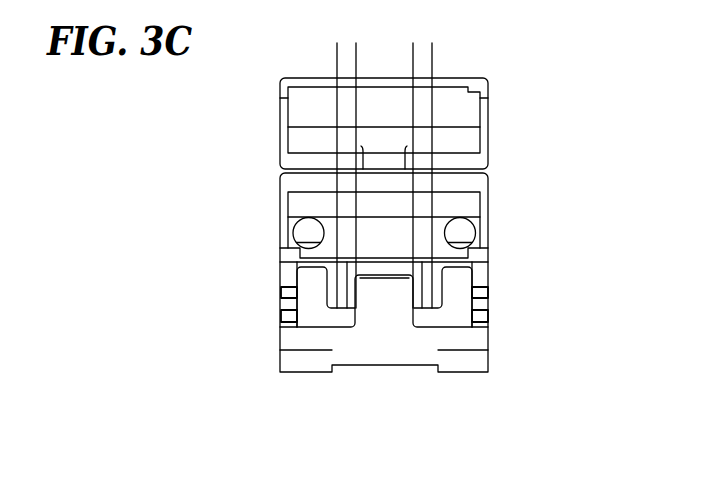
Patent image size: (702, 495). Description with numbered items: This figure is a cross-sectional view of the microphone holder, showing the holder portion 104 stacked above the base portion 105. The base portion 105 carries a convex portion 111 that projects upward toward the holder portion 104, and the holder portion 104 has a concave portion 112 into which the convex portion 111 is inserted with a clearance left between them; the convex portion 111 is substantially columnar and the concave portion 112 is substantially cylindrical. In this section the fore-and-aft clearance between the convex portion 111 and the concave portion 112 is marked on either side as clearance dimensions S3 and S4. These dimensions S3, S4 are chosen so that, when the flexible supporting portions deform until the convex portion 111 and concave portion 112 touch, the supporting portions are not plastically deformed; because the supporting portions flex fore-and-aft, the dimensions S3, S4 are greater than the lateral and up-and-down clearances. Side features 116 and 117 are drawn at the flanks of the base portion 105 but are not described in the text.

The holder portion 104 is at (457, 175).
The base portion 105 is at (309, 340).
The convex portion 111 is at (372, 297).
The concave portion 112 is at (435, 285).
The first side groove 116 is at (289, 303).
The second side groove 117 is at (481, 304).
The clearance dimension in the fore-and-aft direction S3 is at (380, 54).
The clearance dimension in the fore-and-aft direction S4 is at (388, 54).